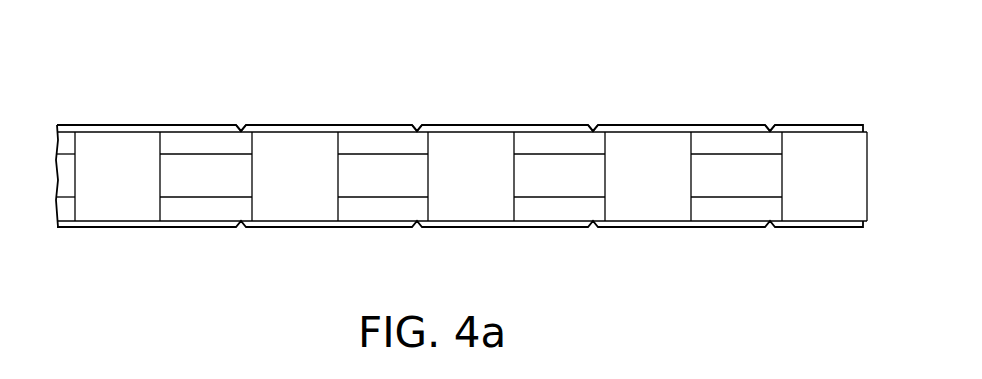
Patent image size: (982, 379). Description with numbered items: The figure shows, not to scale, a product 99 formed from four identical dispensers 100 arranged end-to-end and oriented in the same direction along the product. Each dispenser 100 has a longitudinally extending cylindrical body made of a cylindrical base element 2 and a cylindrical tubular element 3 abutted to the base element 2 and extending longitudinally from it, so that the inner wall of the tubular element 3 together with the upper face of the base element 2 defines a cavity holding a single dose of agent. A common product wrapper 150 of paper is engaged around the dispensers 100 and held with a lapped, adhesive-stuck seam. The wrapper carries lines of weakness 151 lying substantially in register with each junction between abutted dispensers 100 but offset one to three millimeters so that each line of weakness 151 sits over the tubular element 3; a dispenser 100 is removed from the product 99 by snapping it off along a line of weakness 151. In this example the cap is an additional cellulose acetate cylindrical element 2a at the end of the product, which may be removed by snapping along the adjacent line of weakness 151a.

The base element 2 is at (117, 138).
The cellulose acetate cylindrical element 2a is at (825, 134).
The tubular element 3 is at (192, 138).
The product 99 is at (503, 91).
The dispenser 100 is at (252, 242).
The common product wrapper 150 is at (333, 125).
The line of weakness 151 is at (238, 116).
The line of weakness 151a is at (768, 116).